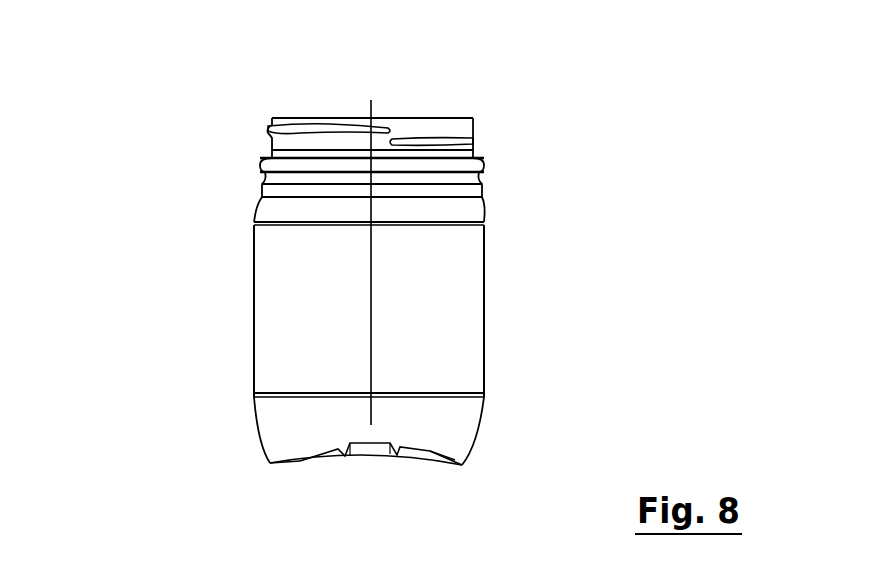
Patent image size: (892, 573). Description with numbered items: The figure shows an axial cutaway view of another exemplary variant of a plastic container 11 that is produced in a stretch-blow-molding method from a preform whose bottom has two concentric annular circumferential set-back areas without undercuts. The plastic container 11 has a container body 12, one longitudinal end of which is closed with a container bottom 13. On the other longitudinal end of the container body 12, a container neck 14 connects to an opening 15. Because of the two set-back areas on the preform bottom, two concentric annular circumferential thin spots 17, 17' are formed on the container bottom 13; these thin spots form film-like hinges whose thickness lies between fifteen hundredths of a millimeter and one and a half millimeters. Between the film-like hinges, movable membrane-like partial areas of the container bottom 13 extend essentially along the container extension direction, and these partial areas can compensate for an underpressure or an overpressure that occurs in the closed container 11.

The plastic container 11 is at (311, 290).
The container body 12 is at (483, 280).
The container bottom 13 is at (342, 483).
The container neck 14 is at (475, 143).
The opening 15 is at (387, 89).
The annular circumferential thin spot 17 is at (377, 494).
The annular circumferential thin spot 17' is at (386, 510).